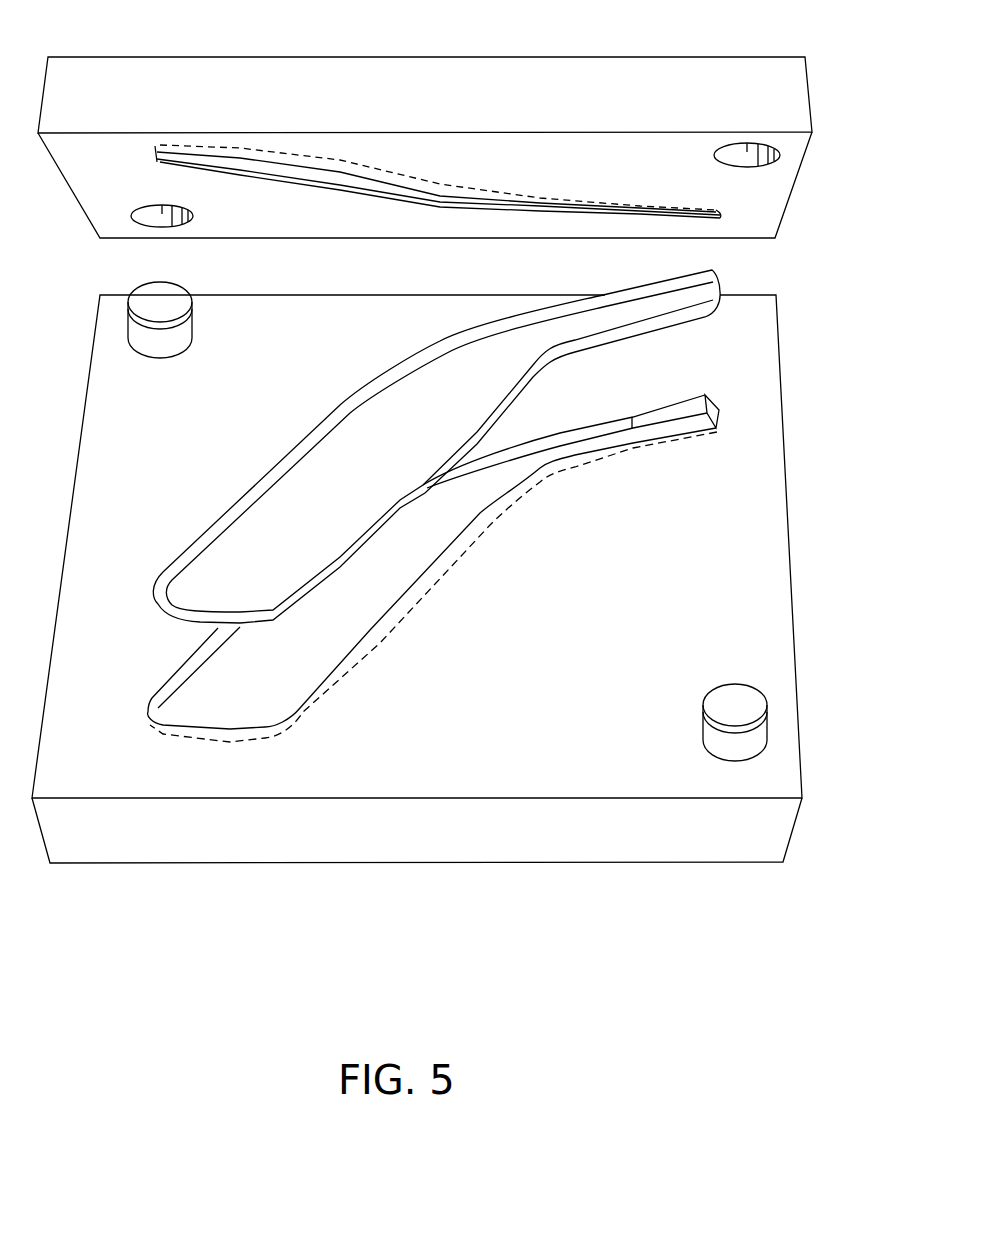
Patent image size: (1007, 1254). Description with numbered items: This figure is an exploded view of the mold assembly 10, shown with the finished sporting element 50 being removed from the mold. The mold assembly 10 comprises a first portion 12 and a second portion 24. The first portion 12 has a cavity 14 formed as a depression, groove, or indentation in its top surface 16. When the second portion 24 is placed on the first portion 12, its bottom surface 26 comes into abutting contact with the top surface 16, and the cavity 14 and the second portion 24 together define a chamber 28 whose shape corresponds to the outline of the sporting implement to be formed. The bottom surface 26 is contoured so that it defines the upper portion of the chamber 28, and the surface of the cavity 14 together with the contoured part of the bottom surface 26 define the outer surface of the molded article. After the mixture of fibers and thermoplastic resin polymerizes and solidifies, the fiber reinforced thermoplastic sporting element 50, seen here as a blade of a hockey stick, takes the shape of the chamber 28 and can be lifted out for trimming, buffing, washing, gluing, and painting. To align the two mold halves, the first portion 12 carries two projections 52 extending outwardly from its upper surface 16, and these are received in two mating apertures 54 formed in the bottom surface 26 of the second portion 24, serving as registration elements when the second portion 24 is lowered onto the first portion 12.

The mold assembly 10 is at (840, 156).
The first portion 12 is at (783, 581).
The cavity 14 is at (167, 682).
The top surface 16 is at (458, 704).
The second portion 24 is at (414, 70).
The bottom surface 26 is at (785, 196).
The chamber 28 is at (327, 178).
The sporting element 50 is at (273, 490).
The projections 52 is at (177, 298).
The apertures 54 is at (150, 213).